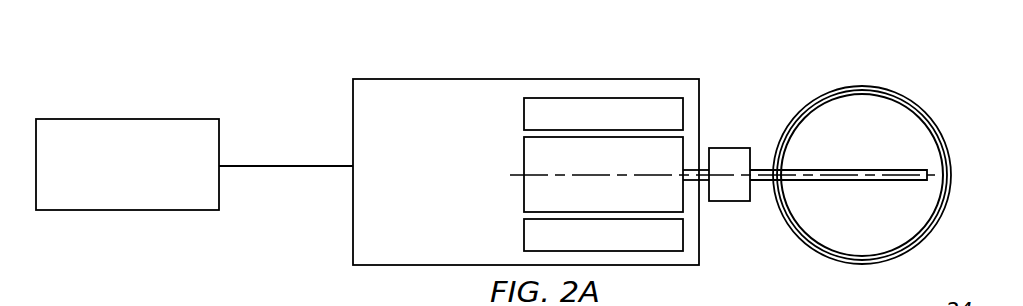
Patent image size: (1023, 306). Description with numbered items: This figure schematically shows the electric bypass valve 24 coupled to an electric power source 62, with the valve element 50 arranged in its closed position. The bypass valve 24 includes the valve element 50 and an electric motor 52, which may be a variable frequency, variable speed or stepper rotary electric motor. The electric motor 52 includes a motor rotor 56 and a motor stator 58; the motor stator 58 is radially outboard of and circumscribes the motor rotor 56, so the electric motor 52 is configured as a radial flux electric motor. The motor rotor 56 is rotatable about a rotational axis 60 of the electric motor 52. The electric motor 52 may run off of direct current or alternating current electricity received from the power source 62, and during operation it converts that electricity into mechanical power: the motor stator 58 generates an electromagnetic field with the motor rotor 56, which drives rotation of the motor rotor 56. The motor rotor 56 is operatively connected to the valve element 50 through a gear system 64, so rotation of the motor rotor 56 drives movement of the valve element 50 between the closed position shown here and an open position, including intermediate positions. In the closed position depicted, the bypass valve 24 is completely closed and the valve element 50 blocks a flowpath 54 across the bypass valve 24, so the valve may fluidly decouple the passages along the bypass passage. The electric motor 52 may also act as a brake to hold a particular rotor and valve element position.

The bypass valve 24 is at (878, 156).
The valve element 50 is at (900, 245).
The electric motor 52 is at (404, 232).
The flowpath 54 is at (898, 138).
The motor rotor 56 is at (589, 167).
The motor stator 58 is at (589, 127).
The rotational axis 60 is at (547, 176).
The electric power source 62 is at (117, 211).
The gear system 64 is at (730, 201).